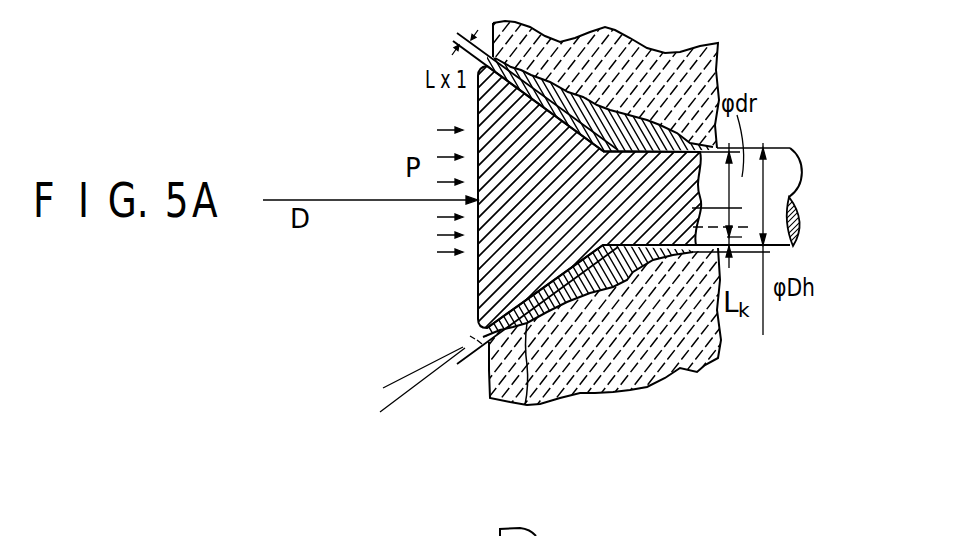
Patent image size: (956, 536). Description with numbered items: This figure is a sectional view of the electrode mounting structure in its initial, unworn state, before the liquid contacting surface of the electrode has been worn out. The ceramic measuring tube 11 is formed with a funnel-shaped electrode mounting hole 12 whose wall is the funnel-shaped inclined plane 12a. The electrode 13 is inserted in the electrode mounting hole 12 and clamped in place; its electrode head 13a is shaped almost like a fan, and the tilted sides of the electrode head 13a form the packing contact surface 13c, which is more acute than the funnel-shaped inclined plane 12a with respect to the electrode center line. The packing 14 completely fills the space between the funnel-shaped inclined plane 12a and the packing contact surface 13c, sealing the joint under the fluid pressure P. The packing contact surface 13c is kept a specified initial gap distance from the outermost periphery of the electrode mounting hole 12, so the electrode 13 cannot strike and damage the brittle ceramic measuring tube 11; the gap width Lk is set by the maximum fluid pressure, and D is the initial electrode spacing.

The ceramic measuring tube 11 is at (683, 370).
The electrode mounting hole 12 is at (650, 103).
The funnel-shaped inclined plane 12a is at (539, 379).
The electrode 13 is at (575, 201).
The electrode head 13a is at (477, 114).
The packing contact surface 13c is at (510, 313).
The packing 14 is at (632, 272).